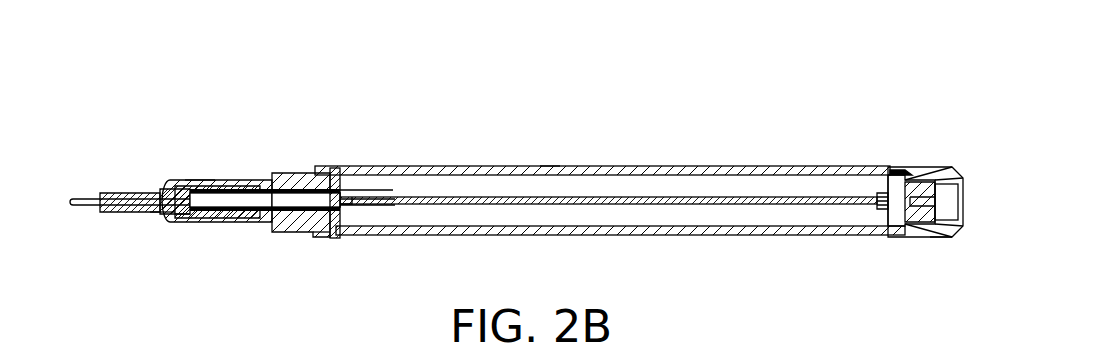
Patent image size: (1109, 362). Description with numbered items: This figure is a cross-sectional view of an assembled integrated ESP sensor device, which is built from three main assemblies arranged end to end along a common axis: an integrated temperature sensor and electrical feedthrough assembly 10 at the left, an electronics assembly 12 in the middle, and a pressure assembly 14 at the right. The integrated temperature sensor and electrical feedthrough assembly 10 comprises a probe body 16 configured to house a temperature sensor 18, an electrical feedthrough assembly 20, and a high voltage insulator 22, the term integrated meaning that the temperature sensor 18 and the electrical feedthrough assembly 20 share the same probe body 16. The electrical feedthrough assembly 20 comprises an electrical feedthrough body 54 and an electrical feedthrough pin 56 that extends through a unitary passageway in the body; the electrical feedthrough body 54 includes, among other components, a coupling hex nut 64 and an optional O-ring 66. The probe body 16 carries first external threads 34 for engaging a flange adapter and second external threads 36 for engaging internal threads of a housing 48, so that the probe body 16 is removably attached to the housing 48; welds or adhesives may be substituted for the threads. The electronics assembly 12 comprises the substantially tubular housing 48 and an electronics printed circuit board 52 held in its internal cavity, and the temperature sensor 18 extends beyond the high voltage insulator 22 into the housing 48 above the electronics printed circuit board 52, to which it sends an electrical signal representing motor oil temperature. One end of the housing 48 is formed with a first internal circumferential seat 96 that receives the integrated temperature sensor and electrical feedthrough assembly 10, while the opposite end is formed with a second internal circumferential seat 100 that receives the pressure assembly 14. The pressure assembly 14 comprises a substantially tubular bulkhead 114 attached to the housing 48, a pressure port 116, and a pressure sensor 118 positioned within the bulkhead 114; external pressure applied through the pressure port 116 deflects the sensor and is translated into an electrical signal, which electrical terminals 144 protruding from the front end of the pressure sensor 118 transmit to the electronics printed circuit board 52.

The integrated temperature sensor and electrical feedthrough assembly 10 is at (226, 82).
The electronics assembly 12 is at (604, 92).
The pressure assembly 14 is at (937, 82).
The probe body 16 is at (237, 177).
The temperature sensor 18 is at (197, 178).
The electrical feedthrough assembly 20 is at (128, 190).
The high voltage insulator 22 is at (346, 222).
The first external threads 34 is at (288, 172).
The second external threads 36 is at (328, 238).
The housing 48 is at (543, 166).
The electronics printed circuit board 52 is at (402, 196).
The electrical feedthrough body 54 is at (109, 206).
The electrical feedthrough pin 56 is at (78, 206).
The coupling hex nut 64 is at (158, 216).
The O-ring 66 is at (180, 212).
The first internal circumferential seat 96 is at (334, 166).
The second internal circumferential seat 100 is at (903, 168).
The bulkhead 114 is at (940, 238).
The pressure port 116 is at (966, 194).
The pressure sensor 118 is at (917, 174).
The electrical terminals 144 is at (880, 212).